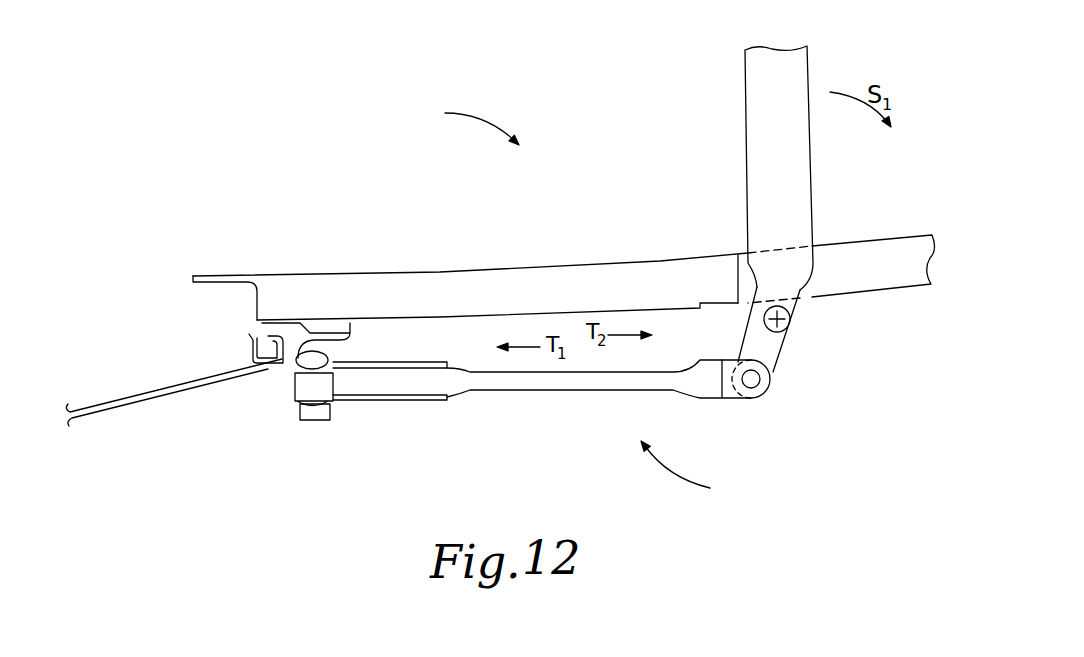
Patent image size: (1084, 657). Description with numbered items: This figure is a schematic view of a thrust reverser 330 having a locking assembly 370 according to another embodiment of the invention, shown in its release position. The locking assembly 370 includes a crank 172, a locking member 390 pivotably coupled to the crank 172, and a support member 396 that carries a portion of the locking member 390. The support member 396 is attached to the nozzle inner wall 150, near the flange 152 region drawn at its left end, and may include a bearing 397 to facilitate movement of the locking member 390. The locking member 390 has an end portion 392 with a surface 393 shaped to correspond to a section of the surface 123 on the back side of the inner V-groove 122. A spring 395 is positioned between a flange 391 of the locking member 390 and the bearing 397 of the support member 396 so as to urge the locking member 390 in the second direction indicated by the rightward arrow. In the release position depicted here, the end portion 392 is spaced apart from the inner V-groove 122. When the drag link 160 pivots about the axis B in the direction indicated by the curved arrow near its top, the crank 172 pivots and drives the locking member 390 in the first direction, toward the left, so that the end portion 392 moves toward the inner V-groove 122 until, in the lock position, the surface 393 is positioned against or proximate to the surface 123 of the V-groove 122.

The drag link 160 is at (755, 117).
The crank 172 is at (775, 352).
The axis B is at (790, 322).
The nozzle inner wall 150 is at (622, 280).
The flange 152 is at (263, 327).
The inner V-groove 122 is at (252, 358).
The surface 123 is at (213, 373).
The support member 396 is at (335, 341).
The surface 393 is at (295, 364).
The end portion 392 is at (295, 382).
The bearing 397 is at (310, 413).
The flange 391 is at (453, 363).
The spring 395 is at (378, 399).
The locking member 390 is at (537, 392).
The thrust reverser 330 is at (462, 123).
The locking assembly 370 is at (695, 472).